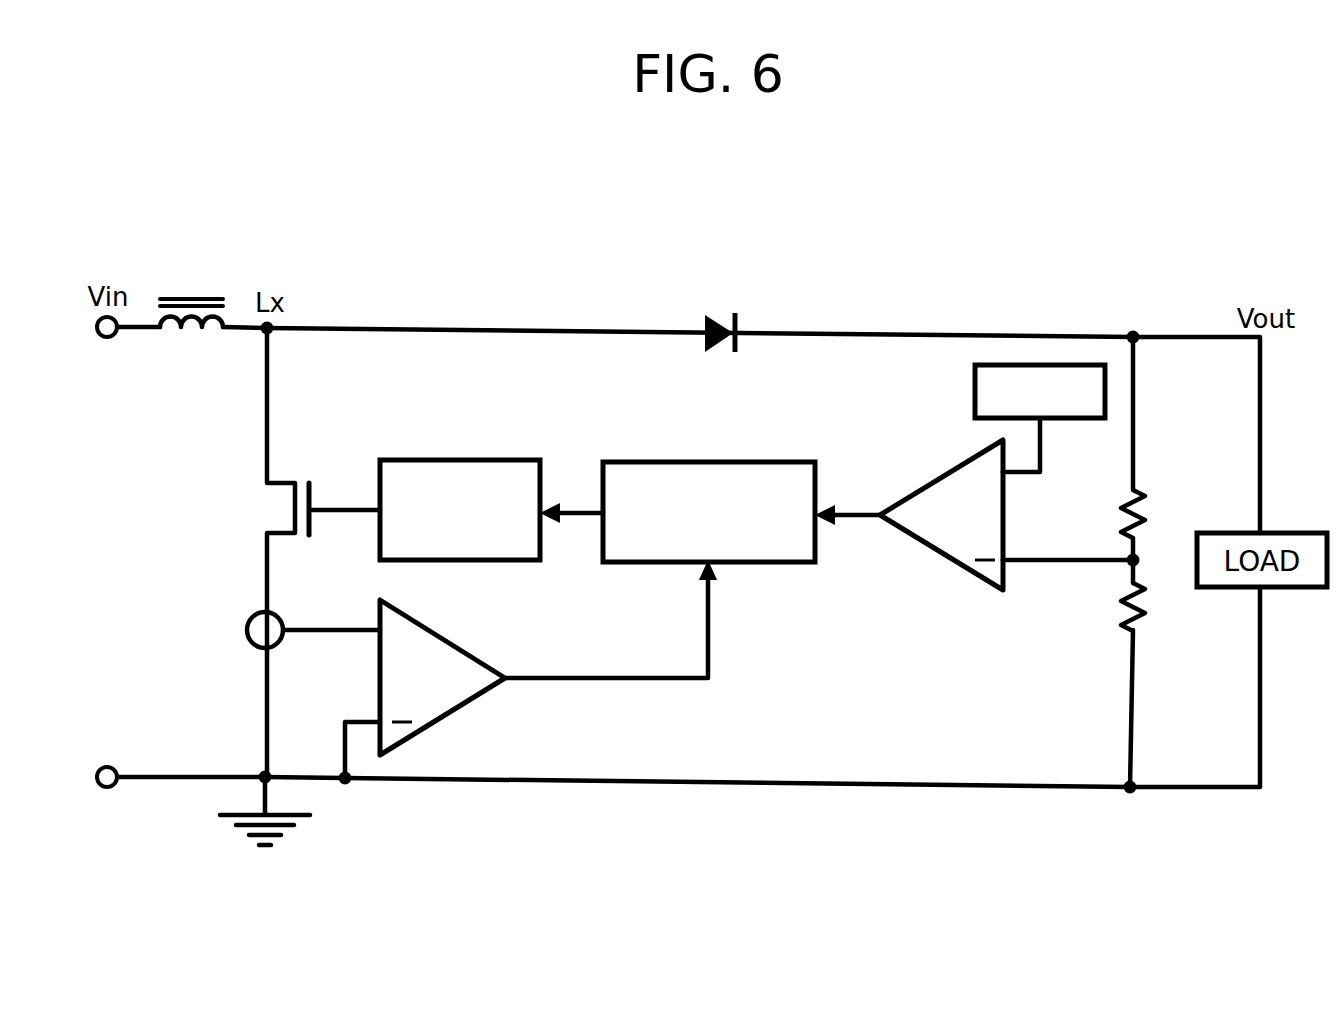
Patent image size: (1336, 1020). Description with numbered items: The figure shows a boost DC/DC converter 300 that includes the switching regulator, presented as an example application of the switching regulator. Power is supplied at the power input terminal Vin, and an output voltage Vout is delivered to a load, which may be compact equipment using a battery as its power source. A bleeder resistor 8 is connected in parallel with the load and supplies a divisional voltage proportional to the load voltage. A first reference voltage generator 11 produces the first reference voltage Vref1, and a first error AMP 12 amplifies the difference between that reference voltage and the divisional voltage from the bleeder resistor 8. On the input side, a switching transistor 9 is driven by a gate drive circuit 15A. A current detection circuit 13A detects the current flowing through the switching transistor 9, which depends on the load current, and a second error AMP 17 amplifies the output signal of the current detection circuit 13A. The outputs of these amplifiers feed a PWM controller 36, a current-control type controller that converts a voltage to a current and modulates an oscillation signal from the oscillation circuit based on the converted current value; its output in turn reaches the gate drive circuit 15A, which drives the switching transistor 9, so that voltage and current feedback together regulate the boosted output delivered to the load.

The boost DC/DC converter 300 is at (828, 240).
The switching transistor 9 is at (304, 470).
The gate drive circuit 15A is at (492, 460).
The PWM controller 36 is at (781, 462).
The first reference voltage generator 11 is at (975, 392).
The first error AMP 12 is at (945, 562).
The bleeder resistor 8 is at (1125, 625).
The current detection circuit 13A is at (280, 617).
The second error AMP 17 is at (455, 712).